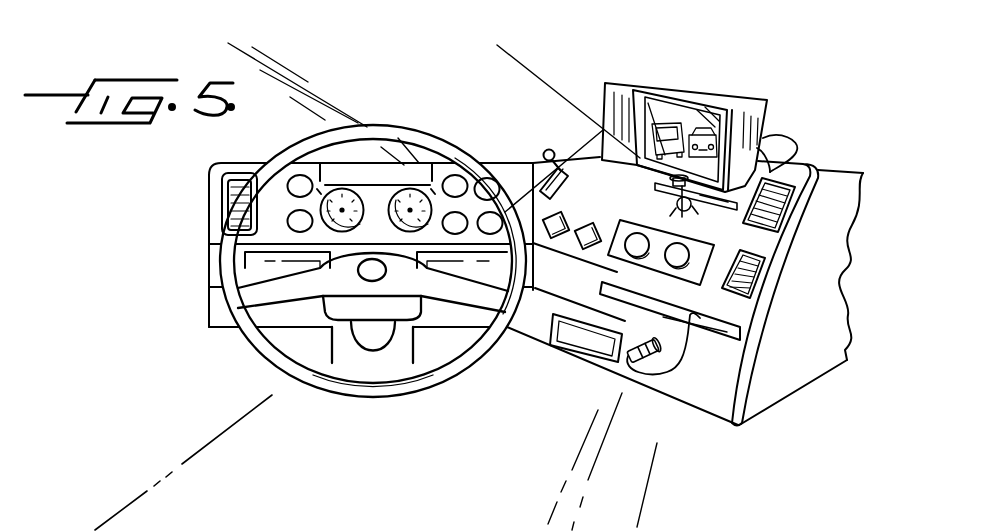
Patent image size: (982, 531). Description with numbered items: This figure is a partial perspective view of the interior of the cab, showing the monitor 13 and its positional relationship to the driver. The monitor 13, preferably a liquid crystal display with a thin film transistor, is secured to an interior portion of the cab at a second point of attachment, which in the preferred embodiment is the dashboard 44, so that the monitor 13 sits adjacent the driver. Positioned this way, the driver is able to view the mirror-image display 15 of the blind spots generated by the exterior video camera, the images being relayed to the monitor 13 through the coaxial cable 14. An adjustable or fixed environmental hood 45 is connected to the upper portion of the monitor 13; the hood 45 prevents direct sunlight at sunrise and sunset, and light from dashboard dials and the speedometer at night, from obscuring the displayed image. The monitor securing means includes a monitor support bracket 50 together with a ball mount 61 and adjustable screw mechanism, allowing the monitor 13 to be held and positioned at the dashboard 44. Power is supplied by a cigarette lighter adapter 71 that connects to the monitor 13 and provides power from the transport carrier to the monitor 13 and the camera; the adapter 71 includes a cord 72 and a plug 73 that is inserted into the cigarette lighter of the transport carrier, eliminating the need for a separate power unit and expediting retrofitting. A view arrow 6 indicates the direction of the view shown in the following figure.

The view direction arrow for FIG. 6 is at (663, 253).
The monitor 13 is at (640, 142).
The coaxial cable 14 is at (784, 141).
The mirror-image view 15 is at (663, 130).
The dashboard 44 is at (602, 170).
The environmental hood 45 is at (668, 87).
The monitor support bracket 50 is at (724, 221).
The ball mount 61 is at (663, 203).
The cigarette lighter adapter 71 is at (612, 350).
The cord 72 is at (770, 172).
The plug 73 is at (641, 362).